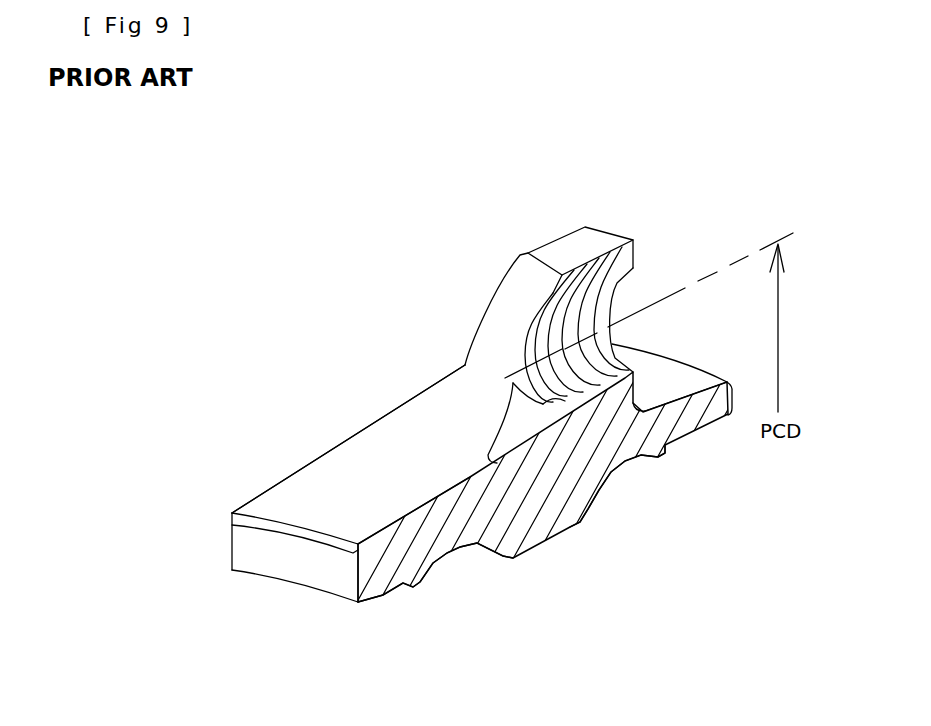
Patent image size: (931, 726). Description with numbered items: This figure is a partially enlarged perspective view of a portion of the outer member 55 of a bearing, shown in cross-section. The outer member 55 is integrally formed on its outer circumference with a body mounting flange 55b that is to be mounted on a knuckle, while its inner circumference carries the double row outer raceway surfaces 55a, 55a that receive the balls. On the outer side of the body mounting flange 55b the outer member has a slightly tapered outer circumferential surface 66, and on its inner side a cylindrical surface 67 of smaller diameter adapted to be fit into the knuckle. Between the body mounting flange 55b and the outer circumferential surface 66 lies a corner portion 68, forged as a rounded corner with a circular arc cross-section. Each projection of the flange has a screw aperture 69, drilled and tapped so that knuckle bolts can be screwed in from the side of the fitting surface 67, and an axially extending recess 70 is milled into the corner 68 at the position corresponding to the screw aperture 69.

The outer member 55 is at (398, 436).
The outer raceway surface 55a is at (477, 545).
The body mounting flange 55b is at (526, 288).
The outer circumferential surface 66 is at (321, 490).
The cylindrical surface 67 is at (668, 382).
The corner portion 68 is at (467, 393).
The screw aperture 69 is at (590, 300).
The recess 70 is at (555, 403).